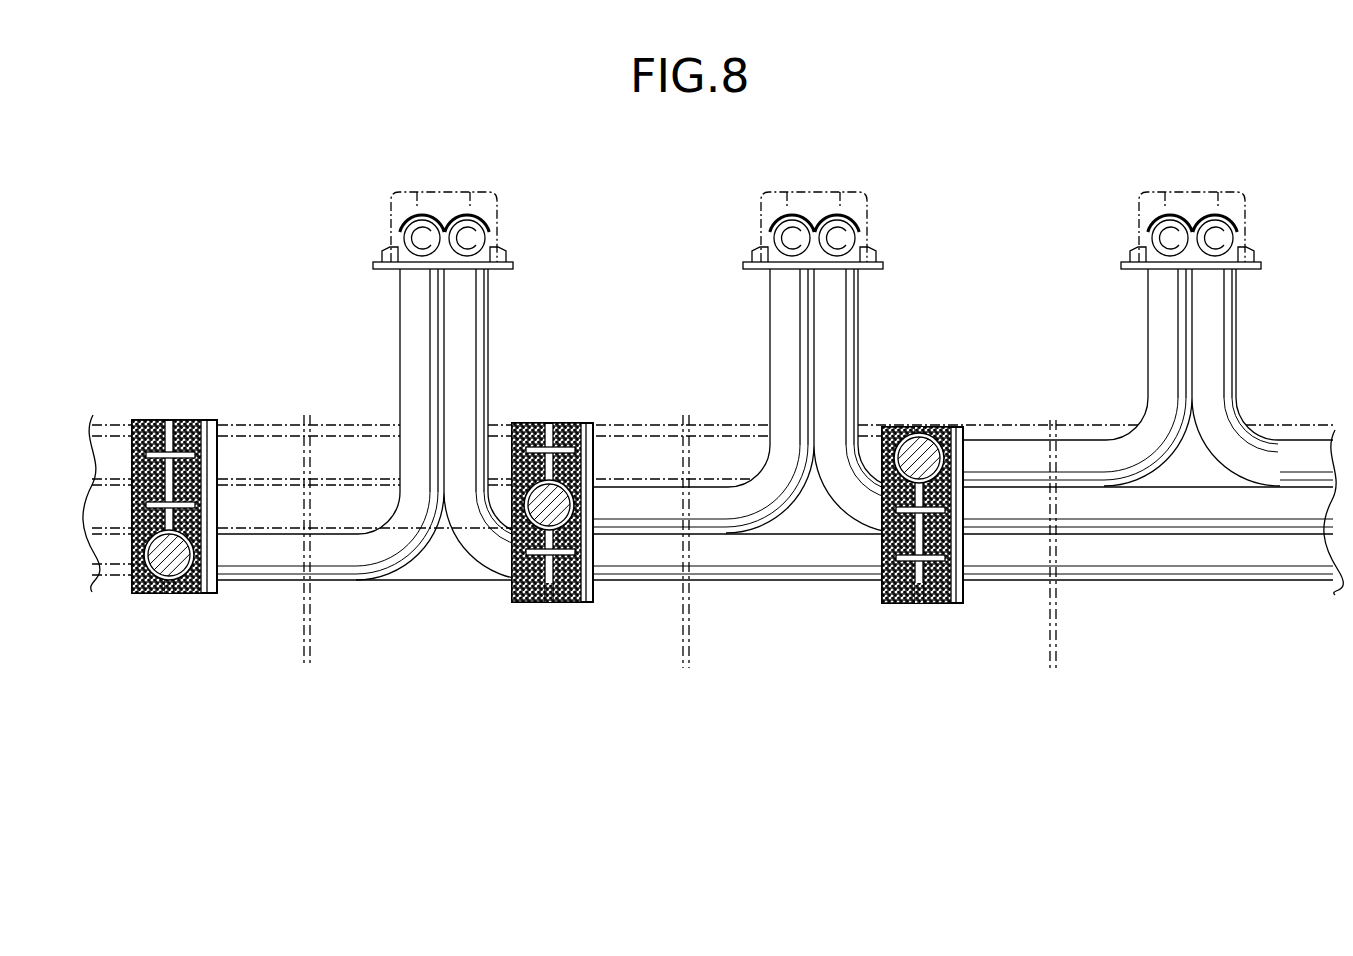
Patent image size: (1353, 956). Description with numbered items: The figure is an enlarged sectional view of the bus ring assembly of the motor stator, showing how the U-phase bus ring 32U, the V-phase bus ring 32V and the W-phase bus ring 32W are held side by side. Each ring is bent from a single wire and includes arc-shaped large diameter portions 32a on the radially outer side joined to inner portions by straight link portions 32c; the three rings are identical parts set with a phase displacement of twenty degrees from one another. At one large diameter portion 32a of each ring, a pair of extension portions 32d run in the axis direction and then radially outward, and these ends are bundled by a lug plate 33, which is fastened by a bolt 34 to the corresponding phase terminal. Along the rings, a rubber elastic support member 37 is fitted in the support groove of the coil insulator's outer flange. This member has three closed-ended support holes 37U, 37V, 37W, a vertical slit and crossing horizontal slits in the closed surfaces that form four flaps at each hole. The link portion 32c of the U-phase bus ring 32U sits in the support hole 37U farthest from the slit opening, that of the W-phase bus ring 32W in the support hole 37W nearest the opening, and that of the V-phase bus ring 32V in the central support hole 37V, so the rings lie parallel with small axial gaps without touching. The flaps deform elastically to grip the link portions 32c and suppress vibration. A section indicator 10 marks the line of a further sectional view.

The section line of FIG. 10 is at (283, 484).
The U-phase bus ring 32U is at (752, 592).
The V-phase bus ring 32V is at (644, 479).
The W-phase bus ring 32W is at (712, 405).
The large diameter portion 32a is at (712, 517).
The link portion 32c is at (948, 465).
The extension portion 32d is at (417, 382).
The lug plate 33 is at (379, 262).
The bolt 34 is at (437, 192).
The elastic support member 37 is at (527, 489).
The support hole 37U is at (158, 576).
The support hole 37V is at (540, 532).
The support hole 37W is at (913, 420).